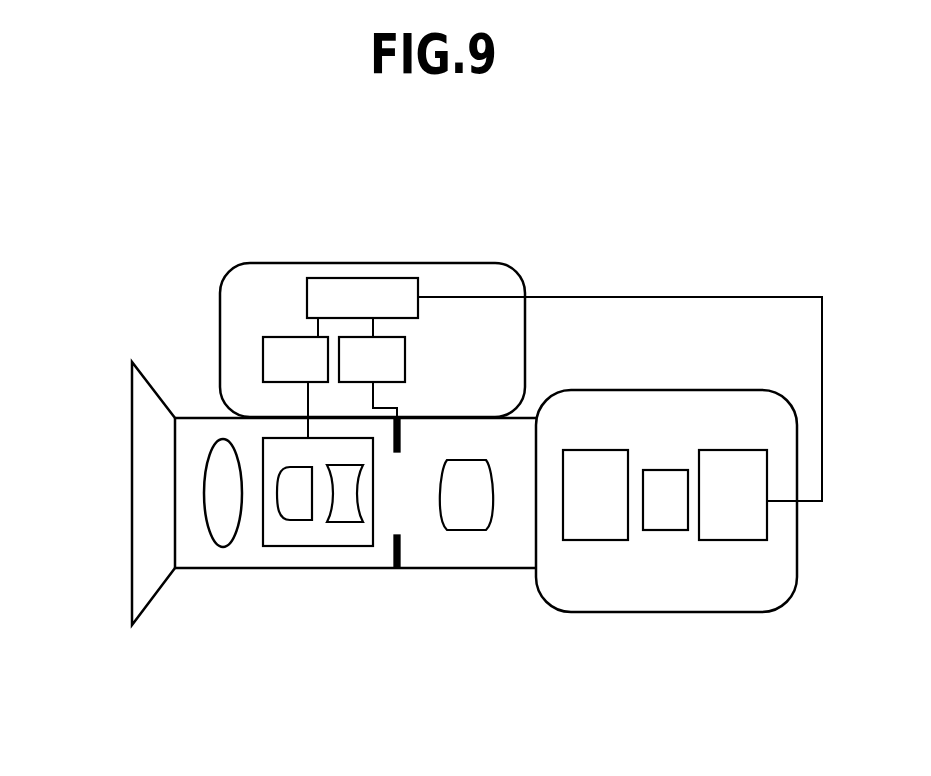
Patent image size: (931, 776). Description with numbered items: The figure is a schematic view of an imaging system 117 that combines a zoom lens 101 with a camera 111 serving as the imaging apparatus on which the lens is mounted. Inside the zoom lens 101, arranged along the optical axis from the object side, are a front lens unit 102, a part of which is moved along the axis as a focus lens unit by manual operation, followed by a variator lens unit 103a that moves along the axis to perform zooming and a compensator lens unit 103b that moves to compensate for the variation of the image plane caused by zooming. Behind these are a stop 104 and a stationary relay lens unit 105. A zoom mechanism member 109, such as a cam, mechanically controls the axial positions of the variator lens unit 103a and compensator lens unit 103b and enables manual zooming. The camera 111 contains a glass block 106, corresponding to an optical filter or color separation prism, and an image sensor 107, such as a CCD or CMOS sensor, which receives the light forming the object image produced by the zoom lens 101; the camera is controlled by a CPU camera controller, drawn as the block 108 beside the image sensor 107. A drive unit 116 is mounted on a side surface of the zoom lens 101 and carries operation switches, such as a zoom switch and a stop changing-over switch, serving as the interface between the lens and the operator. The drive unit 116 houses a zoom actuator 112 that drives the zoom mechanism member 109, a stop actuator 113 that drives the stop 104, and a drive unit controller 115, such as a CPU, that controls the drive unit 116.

The zoom lens 101 is at (130, 420).
The front lens unit 102 is at (210, 440).
The variator lens unit 103a is at (292, 512).
The compensator lens unit 103b is at (335, 525).
The stop 104 is at (392, 550).
The stationary relay lens unit 105 is at (463, 530).
The glass block 106 is at (597, 450).
The image sensor 107 is at (668, 470).
The recording unit 108 is at (735, 450).
The zoom mechanism member 109 is at (300, 550).
The camera 111 is at (733, 612).
The zoom actuator 112 is at (263, 357).
The stop actuator 113 is at (405, 358).
The drive unit controller 115 is at (355, 278).
The drive unit 116 is at (255, 263).
The imaging system 117 is at (712, 628).